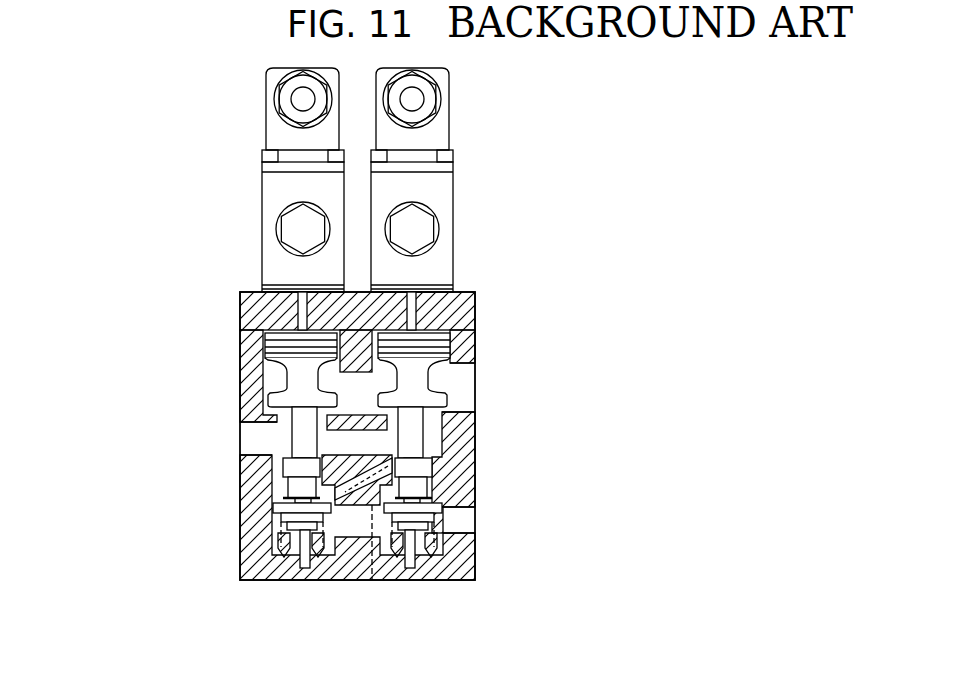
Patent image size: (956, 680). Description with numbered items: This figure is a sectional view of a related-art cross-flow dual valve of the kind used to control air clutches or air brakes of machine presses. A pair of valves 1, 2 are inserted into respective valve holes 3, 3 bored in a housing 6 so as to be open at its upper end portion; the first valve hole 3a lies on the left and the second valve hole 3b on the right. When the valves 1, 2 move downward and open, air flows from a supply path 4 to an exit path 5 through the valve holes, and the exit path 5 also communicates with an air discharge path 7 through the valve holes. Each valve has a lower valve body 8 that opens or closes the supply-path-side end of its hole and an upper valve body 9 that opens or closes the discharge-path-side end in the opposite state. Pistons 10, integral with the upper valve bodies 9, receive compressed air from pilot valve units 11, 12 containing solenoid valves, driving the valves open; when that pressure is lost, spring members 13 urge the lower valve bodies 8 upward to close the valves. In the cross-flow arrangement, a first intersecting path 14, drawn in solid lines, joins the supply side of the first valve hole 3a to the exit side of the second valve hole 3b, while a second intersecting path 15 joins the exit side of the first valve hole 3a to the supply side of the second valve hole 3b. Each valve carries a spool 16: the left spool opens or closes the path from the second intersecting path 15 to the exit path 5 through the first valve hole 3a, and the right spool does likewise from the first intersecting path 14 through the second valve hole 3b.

The valve 1 is at (275, 325).
The valve 2 is at (438, 325).
The valve holes 3 is at (347, 435).
The first valve hole 3a is at (283, 446).
The second valve hole 3b is at (429, 427).
The supply path 4 is at (455, 533).
The exit path 5 is at (255, 442).
The housing 6 is at (261, 570).
The air discharge path 7 is at (457, 380).
The lower valve body 8 is at (287, 505).
The upper valve body 9 is at (290, 393).
The piston 10 is at (282, 343).
The pilot valve unit 11 is at (250, 192).
The pilot valve unit 12 is at (465, 192).
The spring member 13 is at (285, 522).
The first intersecting path 14 is at (358, 505).
The second intersecting path 15 is at (372, 582).
The spool 16 is at (290, 467).